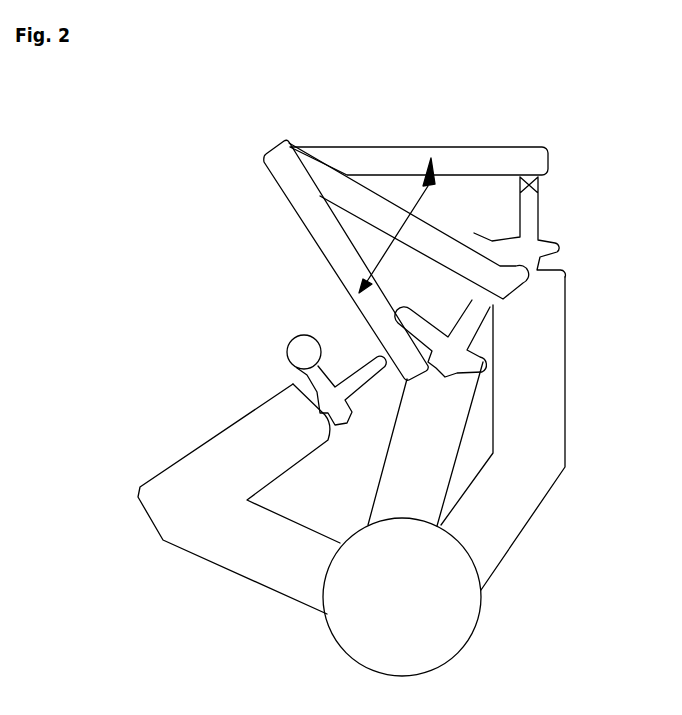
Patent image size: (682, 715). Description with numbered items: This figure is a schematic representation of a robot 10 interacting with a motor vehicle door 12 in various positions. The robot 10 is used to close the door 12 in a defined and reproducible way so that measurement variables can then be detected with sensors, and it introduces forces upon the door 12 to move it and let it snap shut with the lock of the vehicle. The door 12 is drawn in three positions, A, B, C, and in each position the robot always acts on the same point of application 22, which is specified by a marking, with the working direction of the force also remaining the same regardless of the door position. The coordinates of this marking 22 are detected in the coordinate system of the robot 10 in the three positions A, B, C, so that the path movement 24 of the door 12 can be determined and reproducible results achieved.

The robot 10 is at (542, 535).
The door 12 is at (233, 158).
The point of application 22 is at (547, 183).
The path movement 24 is at (417, 203).
The first door position A is at (300, 224).
The second door position B is at (443, 232).
The third door position C is at (479, 147).